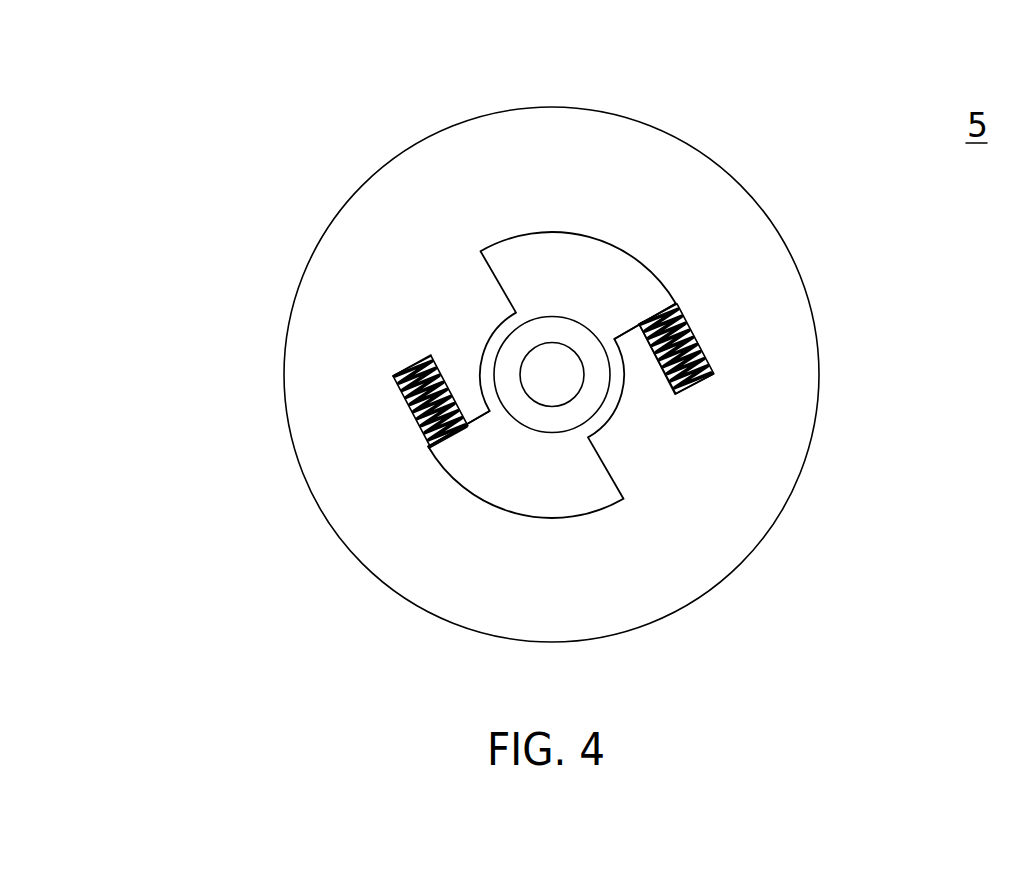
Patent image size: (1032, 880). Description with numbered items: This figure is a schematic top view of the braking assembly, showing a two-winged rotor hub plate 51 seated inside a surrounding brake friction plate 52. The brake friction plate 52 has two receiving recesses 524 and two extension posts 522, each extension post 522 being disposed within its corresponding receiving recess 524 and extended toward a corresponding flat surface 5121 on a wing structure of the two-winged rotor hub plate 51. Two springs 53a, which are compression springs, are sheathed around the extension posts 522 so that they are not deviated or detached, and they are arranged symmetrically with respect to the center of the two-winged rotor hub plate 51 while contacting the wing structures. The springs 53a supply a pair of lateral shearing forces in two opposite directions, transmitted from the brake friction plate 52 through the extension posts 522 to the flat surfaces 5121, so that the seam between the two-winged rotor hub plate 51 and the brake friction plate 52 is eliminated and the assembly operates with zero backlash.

The two-winged rotor hub plate 51 is at (583, 262).
The flat surface 5121 is at (465, 421).
The brake friction plate 52 is at (784, 386).
The extension post 522 is at (413, 369).
The receiving recess 524 is at (677, 395).
The spring 53a is at (393, 382).